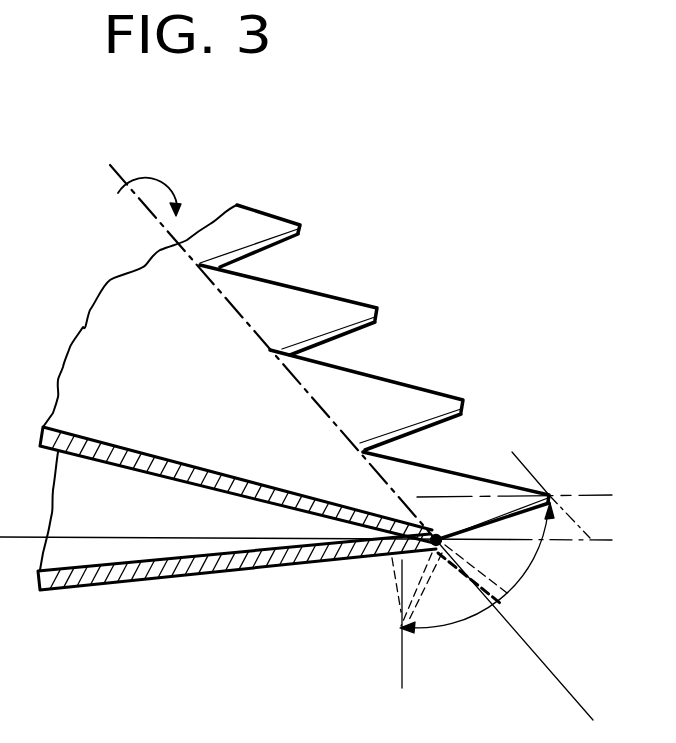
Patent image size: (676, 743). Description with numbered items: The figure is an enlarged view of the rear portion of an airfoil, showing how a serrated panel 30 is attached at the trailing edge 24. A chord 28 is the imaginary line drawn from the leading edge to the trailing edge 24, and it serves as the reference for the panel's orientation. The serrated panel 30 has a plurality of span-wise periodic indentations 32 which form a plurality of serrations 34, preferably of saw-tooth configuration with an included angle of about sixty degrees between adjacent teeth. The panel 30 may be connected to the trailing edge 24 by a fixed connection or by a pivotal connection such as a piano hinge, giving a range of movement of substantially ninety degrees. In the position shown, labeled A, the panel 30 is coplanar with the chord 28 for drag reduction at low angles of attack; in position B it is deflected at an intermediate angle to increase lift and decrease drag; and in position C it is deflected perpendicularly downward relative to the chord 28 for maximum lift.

The trailing edge 24 is at (247, 317).
The chord 28 is at (160, 538).
The serrated panel 30 is at (507, 410).
The span-wise periodic indentations 32 is at (305, 246).
The serrations 34 is at (417, 387).